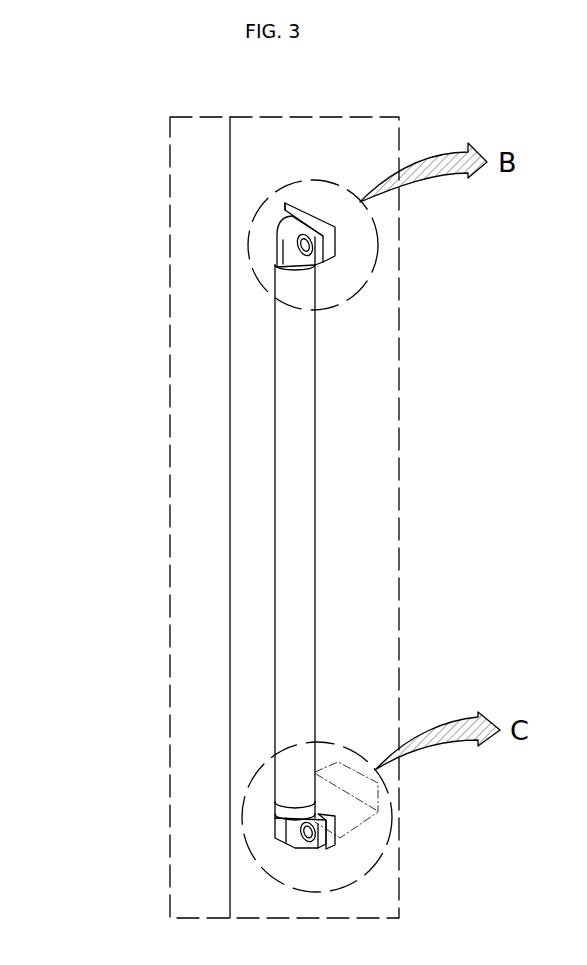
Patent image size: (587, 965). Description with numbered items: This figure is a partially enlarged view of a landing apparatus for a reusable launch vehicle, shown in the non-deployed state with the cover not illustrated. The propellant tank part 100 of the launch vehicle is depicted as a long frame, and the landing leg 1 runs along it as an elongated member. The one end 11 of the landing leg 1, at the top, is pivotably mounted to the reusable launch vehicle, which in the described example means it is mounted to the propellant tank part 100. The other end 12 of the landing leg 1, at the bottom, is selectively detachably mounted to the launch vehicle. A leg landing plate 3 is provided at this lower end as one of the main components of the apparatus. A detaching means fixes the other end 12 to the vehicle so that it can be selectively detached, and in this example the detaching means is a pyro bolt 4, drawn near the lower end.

The propellant tank part 100 is at (360, 565).
The landing leg 1 is at (263, 489).
The one end of the landing leg 11 is at (273, 237).
The other end of the landing leg 12 is at (275, 828).
The leg landing plate 3 is at (337, 843).
The pyro bolt 4 is at (350, 770).